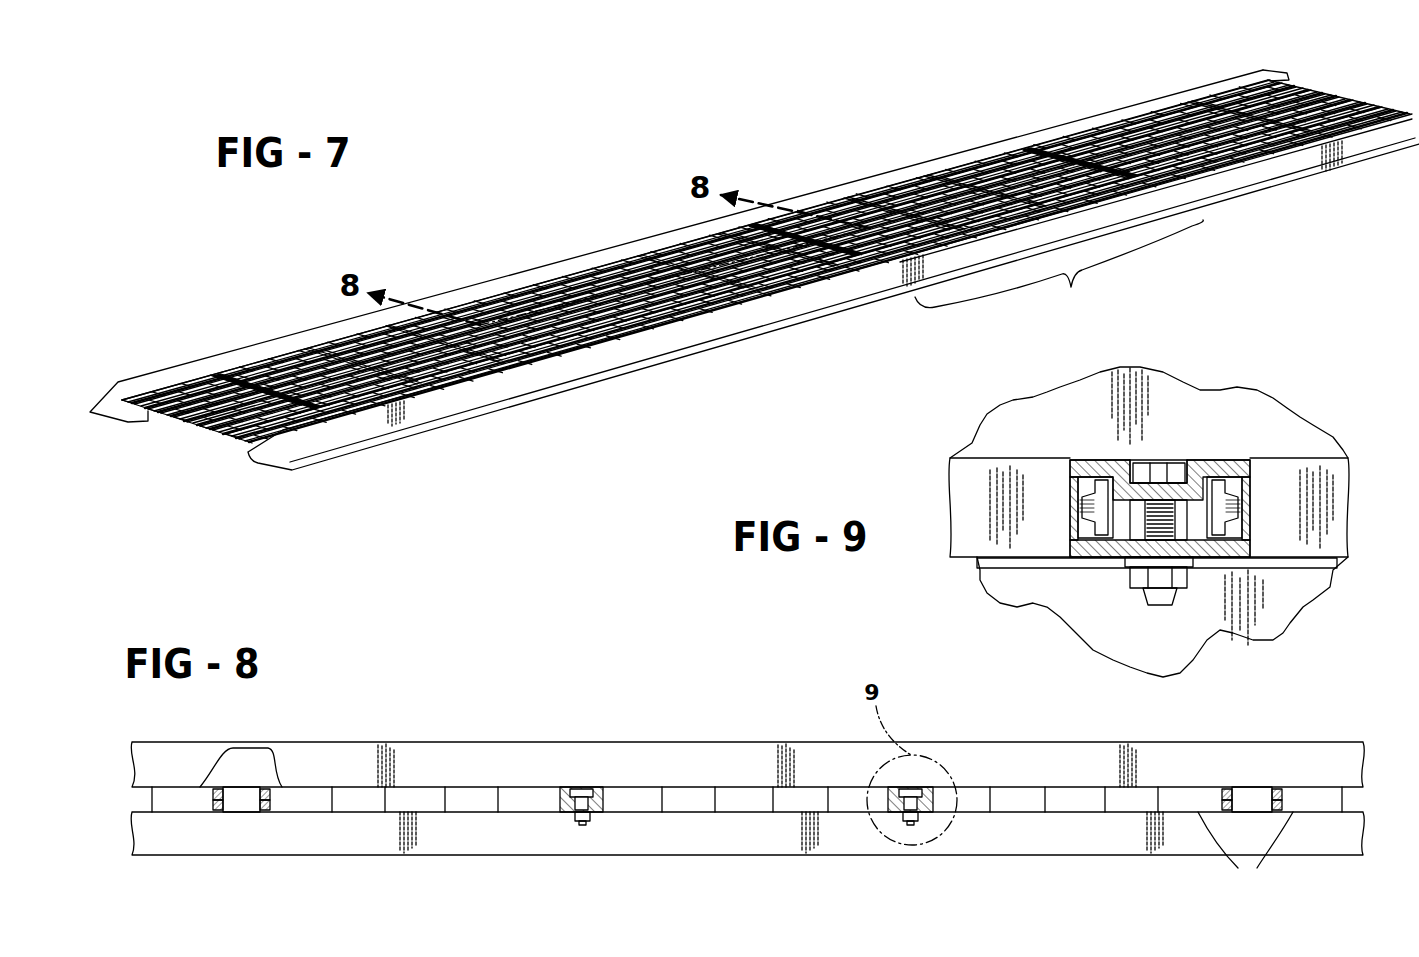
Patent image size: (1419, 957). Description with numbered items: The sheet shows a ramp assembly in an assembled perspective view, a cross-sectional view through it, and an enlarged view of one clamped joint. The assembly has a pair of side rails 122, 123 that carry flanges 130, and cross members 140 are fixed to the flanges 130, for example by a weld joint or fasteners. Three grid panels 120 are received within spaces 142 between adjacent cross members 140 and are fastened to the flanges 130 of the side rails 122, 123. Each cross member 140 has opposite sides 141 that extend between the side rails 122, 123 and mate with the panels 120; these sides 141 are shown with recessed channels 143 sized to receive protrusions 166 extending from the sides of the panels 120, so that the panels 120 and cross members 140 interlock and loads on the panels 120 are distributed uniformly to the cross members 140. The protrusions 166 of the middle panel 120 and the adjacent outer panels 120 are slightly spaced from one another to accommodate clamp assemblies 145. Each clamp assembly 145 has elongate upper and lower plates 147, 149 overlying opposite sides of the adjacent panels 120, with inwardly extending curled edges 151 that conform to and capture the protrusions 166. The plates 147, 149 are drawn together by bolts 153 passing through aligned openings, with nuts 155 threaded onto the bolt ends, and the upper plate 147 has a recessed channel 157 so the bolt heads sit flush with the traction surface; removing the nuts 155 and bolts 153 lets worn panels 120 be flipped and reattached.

In FIG. 7, the panels 120 is at (1238, 88).
In FIG. 8, the panels 120 is at (412, 786).
In FIG. 7, the side rail 122 is at (493, 396).
In FIG. 7, the side rail 123 is at (558, 262).
In FIG. 8, the flanges 130 is at (466, 813).
In FIG. 9, the flanges 130 is at (1300, 569).
In FIG. 7, the cross members 140 is at (223, 375).
In FIG. 8, the cross members 140 is at (239, 813).
In FIG. 8, the opposite sides 141 is at (265, 748).
In FIG. 7, the spaces 142 is at (1059, 265).
In FIG. 8, the recessed channels 143 is at (213, 803).
In FIG. 7, the clamp assemblies 145 is at (384, 324).
In FIG. 8, the clamp assemblies 145 is at (594, 784).
In FIG. 9, the clamp assemblies 145 is at (1218, 454).
In FIG. 9, the upper plate 147 is at (1080, 460).
In FIG. 9, the lower plate 149 is at (1090, 558).
In FIG. 9, the curled edges 151 is at (1085, 500).
In FIG. 9, the bolts 153 is at (1154, 460).
In FIG. 9, the nuts 155 is at (1182, 606).
In FIG. 9, the recessed channel 157 is at (1181, 470).
In FIG. 8, the protrusions 166 is at (577, 786).
In FIG. 9, the protrusions 166 is at (1125, 545).